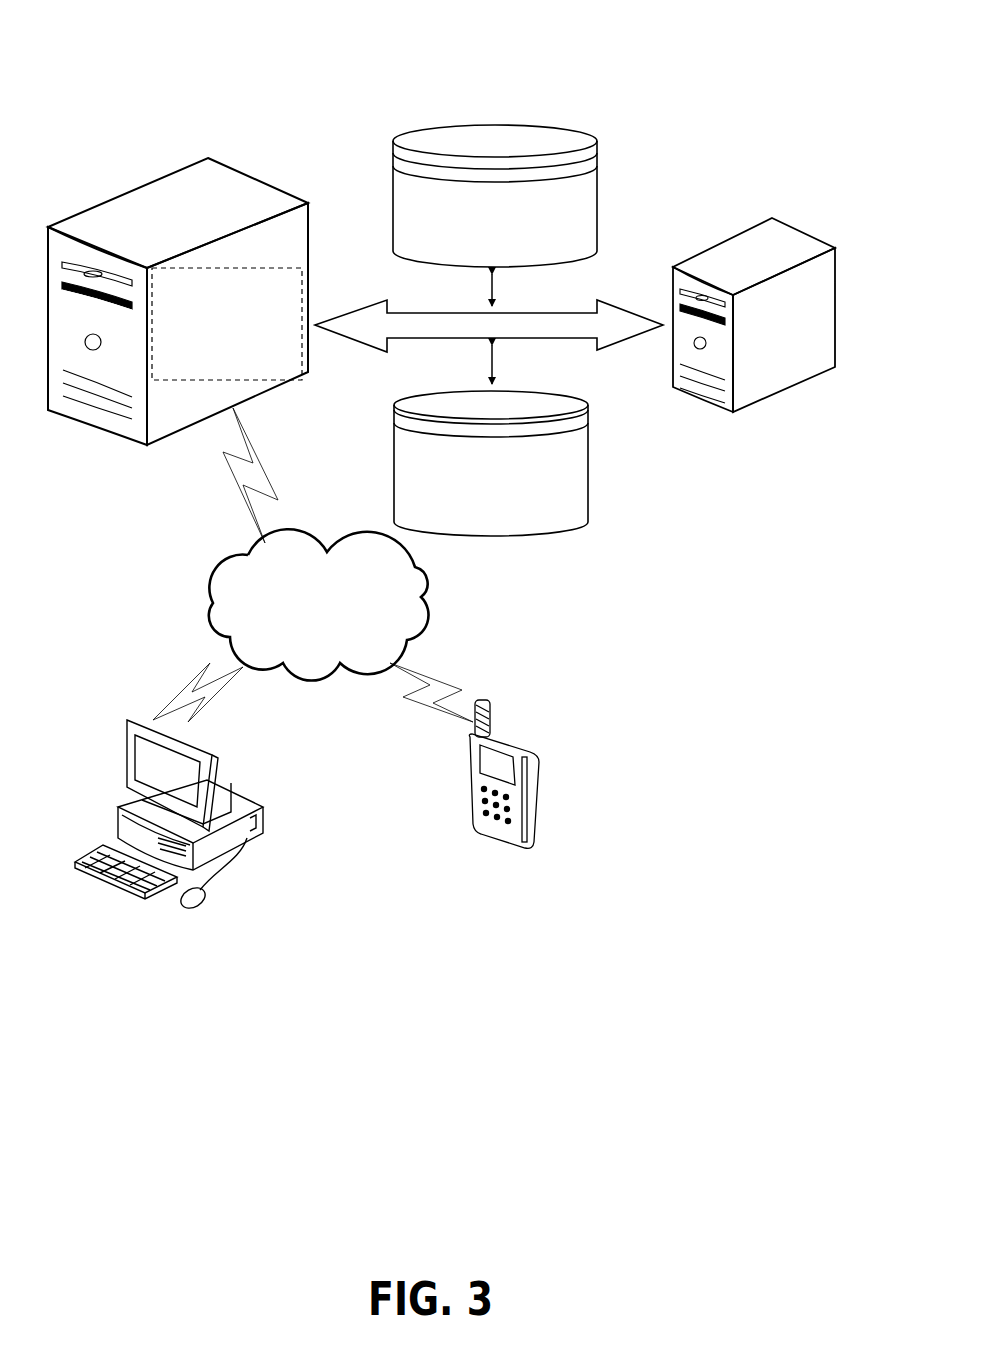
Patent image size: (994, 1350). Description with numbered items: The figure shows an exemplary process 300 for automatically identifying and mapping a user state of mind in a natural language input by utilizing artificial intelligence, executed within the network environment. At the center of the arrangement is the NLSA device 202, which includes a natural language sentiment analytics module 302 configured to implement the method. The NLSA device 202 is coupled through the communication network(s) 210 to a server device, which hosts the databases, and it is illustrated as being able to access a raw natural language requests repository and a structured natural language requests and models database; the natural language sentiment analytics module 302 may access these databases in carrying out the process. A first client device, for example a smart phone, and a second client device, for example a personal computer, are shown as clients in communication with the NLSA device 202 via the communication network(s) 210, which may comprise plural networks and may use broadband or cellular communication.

The exemplary process 300 is at (242, 92).
The NLSA device 202 is at (120, 238).
The natural language sentiment analytics module 302 is at (227, 324).
The communication network(s) 210 is at (408, 498).